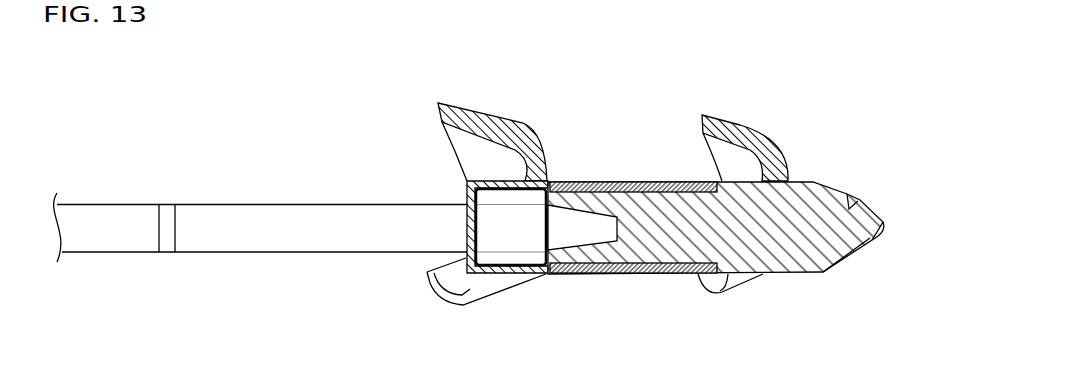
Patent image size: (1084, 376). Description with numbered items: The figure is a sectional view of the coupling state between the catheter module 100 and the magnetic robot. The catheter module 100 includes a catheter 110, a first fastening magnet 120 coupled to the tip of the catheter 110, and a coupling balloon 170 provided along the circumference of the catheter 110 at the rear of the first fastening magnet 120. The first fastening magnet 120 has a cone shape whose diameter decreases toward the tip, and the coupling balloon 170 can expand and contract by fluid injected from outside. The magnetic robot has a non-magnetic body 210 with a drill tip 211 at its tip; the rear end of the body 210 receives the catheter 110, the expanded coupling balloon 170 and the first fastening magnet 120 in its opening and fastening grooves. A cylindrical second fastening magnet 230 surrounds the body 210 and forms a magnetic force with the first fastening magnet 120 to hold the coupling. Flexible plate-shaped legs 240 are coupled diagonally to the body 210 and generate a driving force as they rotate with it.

The catheter module 100 is at (260, 236).
The catheter 110 is at (287, 203).
The first fastening magnet 120 is at (582, 232).
The coupling balloon 170 is at (508, 260).
The body 210 is at (753, 263).
The drill tip 211 is at (861, 201).
The second fastening magnet 230 is at (625, 181).
The leg 240 is at (748, 123).